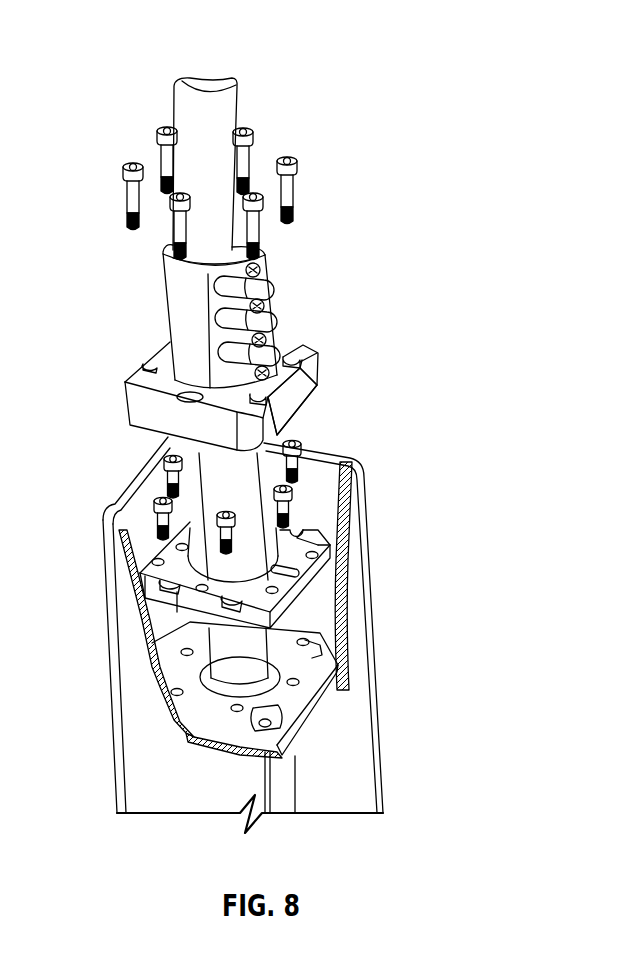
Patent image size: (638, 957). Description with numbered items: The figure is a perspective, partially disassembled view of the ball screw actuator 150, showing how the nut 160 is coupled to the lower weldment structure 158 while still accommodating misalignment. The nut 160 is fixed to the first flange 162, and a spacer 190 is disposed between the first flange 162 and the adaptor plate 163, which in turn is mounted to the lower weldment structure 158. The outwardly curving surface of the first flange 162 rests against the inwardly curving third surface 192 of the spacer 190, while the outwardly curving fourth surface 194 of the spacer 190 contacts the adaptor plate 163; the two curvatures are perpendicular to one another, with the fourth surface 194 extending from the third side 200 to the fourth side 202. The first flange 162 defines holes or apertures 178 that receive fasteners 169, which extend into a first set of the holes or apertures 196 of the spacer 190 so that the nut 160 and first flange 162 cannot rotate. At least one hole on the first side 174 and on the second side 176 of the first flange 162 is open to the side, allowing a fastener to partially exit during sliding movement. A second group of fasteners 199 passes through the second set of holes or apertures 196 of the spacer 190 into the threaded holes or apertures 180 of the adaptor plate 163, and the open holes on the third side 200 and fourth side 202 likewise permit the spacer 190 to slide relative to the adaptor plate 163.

The ball screw actuator 150 is at (314, 49).
The lower weldment structure 158 is at (355, 742).
The nut 160 is at (176, 287).
The first flange 162 is at (318, 368).
The adaptor plate 163 is at (322, 685).
The fasteners 169 is at (290, 197).
The first side 174 is at (292, 403).
The second side 176 is at (150, 352).
The holes or apertures 178 is at (302, 350).
The holes or apertures 180 is at (224, 710).
The spacer 190 is at (285, 586).
The third surface 192 is at (147, 570).
The fourth surface 194 is at (204, 611).
The holes or apertures 196 is at (318, 574).
The second group of fasteners 199 is at (163, 478).
The third side 200 is at (196, 617).
The fourth side 202 is at (330, 527).